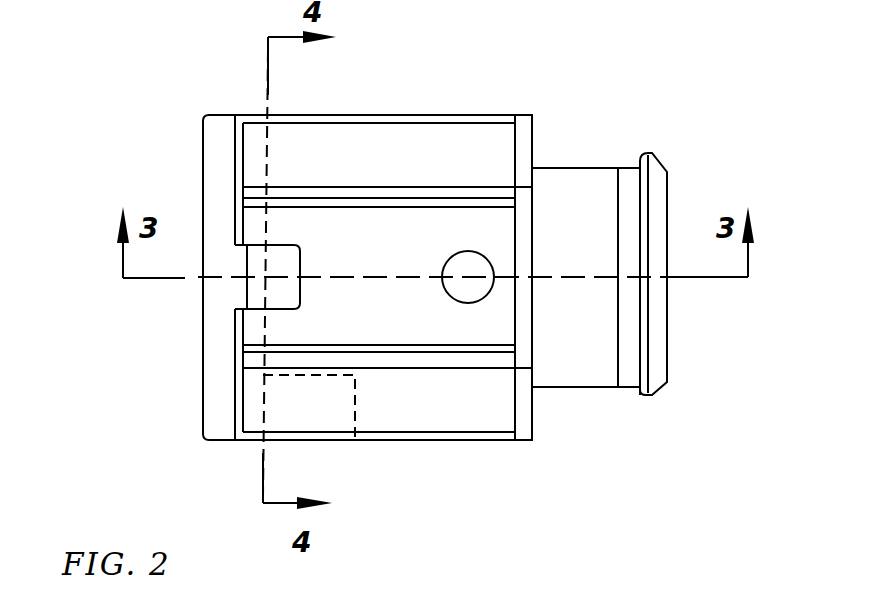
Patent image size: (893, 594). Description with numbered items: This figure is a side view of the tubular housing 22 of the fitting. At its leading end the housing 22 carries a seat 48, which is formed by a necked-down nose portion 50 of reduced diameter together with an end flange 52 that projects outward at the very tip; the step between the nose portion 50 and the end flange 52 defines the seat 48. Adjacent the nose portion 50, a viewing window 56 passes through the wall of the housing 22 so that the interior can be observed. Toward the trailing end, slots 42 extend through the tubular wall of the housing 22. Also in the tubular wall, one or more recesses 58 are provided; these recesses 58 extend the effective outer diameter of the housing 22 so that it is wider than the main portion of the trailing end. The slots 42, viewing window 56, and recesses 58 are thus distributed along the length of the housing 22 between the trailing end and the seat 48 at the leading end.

The tubular housing 22 is at (480, 85).
The slots 42 is at (287, 253).
The seat 48 is at (570, 368).
The necked-down nose portion 50 is at (570, 168).
The end flange 52 is at (645, 397).
The viewing window 56 is at (462, 262).
The recesses 58 is at (325, 407).